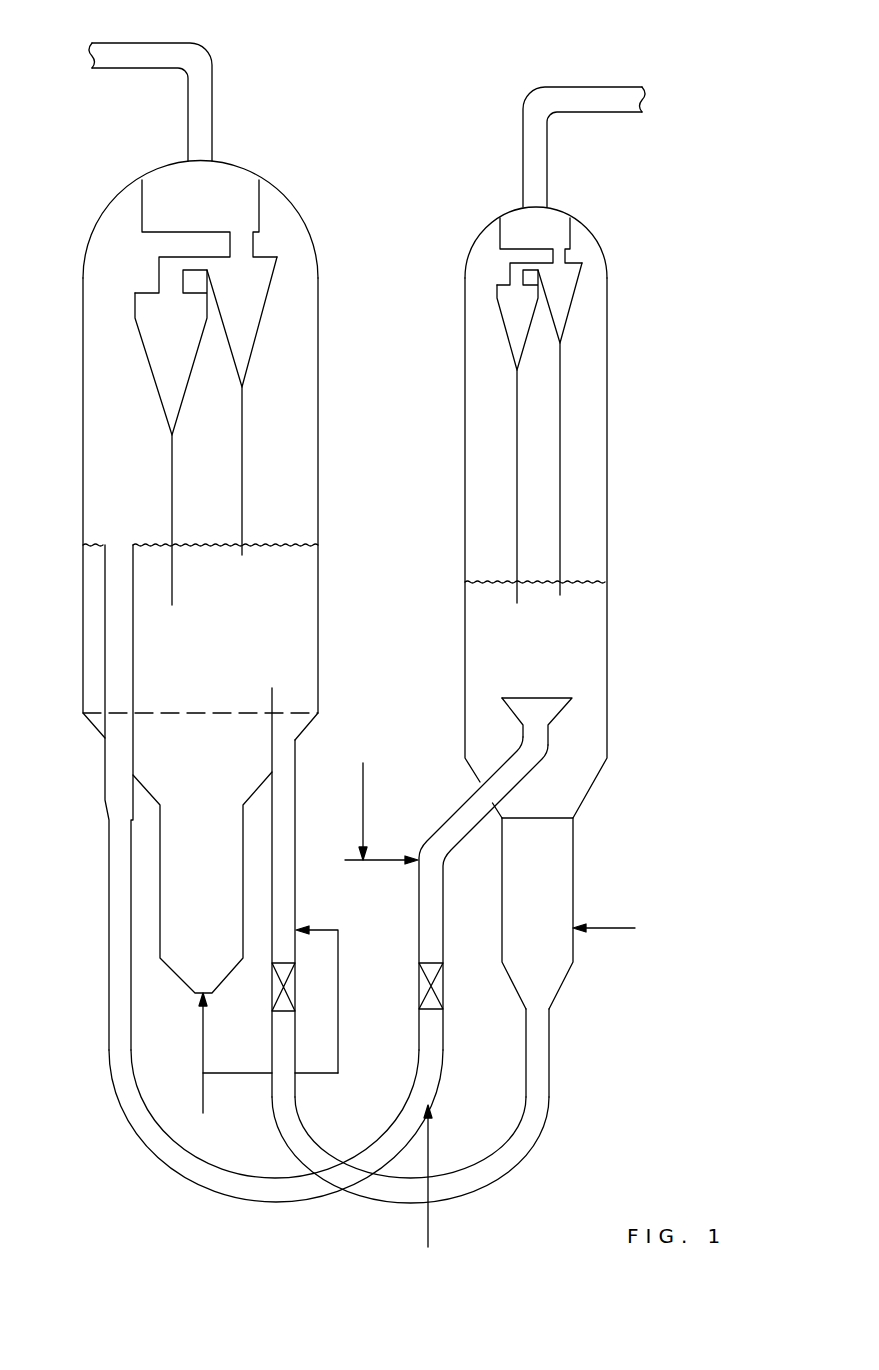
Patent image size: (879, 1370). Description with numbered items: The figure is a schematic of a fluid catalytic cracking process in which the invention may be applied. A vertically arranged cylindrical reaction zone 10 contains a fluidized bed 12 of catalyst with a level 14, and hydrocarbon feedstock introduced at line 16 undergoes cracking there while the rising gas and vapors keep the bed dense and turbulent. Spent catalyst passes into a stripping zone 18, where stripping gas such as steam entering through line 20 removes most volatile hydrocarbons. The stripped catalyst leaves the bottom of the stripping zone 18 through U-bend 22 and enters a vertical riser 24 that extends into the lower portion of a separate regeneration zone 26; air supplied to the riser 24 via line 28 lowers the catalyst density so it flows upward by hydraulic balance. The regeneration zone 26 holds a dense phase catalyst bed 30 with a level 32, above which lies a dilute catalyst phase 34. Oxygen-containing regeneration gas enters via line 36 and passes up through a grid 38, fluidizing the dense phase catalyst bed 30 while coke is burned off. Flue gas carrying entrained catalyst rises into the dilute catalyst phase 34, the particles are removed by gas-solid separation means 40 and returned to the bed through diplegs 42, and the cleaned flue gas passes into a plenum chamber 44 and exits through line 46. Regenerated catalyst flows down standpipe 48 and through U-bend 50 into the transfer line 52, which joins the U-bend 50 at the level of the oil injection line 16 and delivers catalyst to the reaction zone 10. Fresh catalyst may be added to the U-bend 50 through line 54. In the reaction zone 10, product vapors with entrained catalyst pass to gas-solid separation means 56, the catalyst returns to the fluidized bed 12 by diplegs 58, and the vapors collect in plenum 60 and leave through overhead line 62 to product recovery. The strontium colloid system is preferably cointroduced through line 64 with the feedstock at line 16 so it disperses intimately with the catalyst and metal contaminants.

The reaction zone 10 is at (612, 422).
The fluidized bed 12 is at (553, 663).
The level 14 is at (577, 575).
The line 16 is at (373, 870).
The stripping zone 18 is at (558, 926).
The line 20 is at (614, 928).
The U-bend 22 is at (520, 1162).
The vertical riser 24 is at (303, 913).
The regeneration zone 26 is at (80, 323).
The line 28 is at (338, 1008).
The dense phase catalyst bed 30 is at (255, 653).
The level 32 is at (277, 538).
The dilute catalyst phase 34 is at (228, 456).
The line 36 is at (210, 1099).
The grid 38 is at (202, 712).
The gas-solid separation means 40 is at (242, 325).
The diplegs 42 is at (162, 470).
The plenum chamber 44 is at (205, 199).
The line 46 is at (137, 35).
The standpipe 48 is at (100, 910).
The U-bend 50 is at (140, 1145).
The transfer line 52 is at (433, 812).
The line 54 is at (438, 1236).
The gas-solid separation means 56 is at (557, 310).
The diplegs 58 is at (512, 496).
The plenum 60 is at (545, 228).
The overhead line 62 is at (588, 82).
The line 64 is at (368, 785).